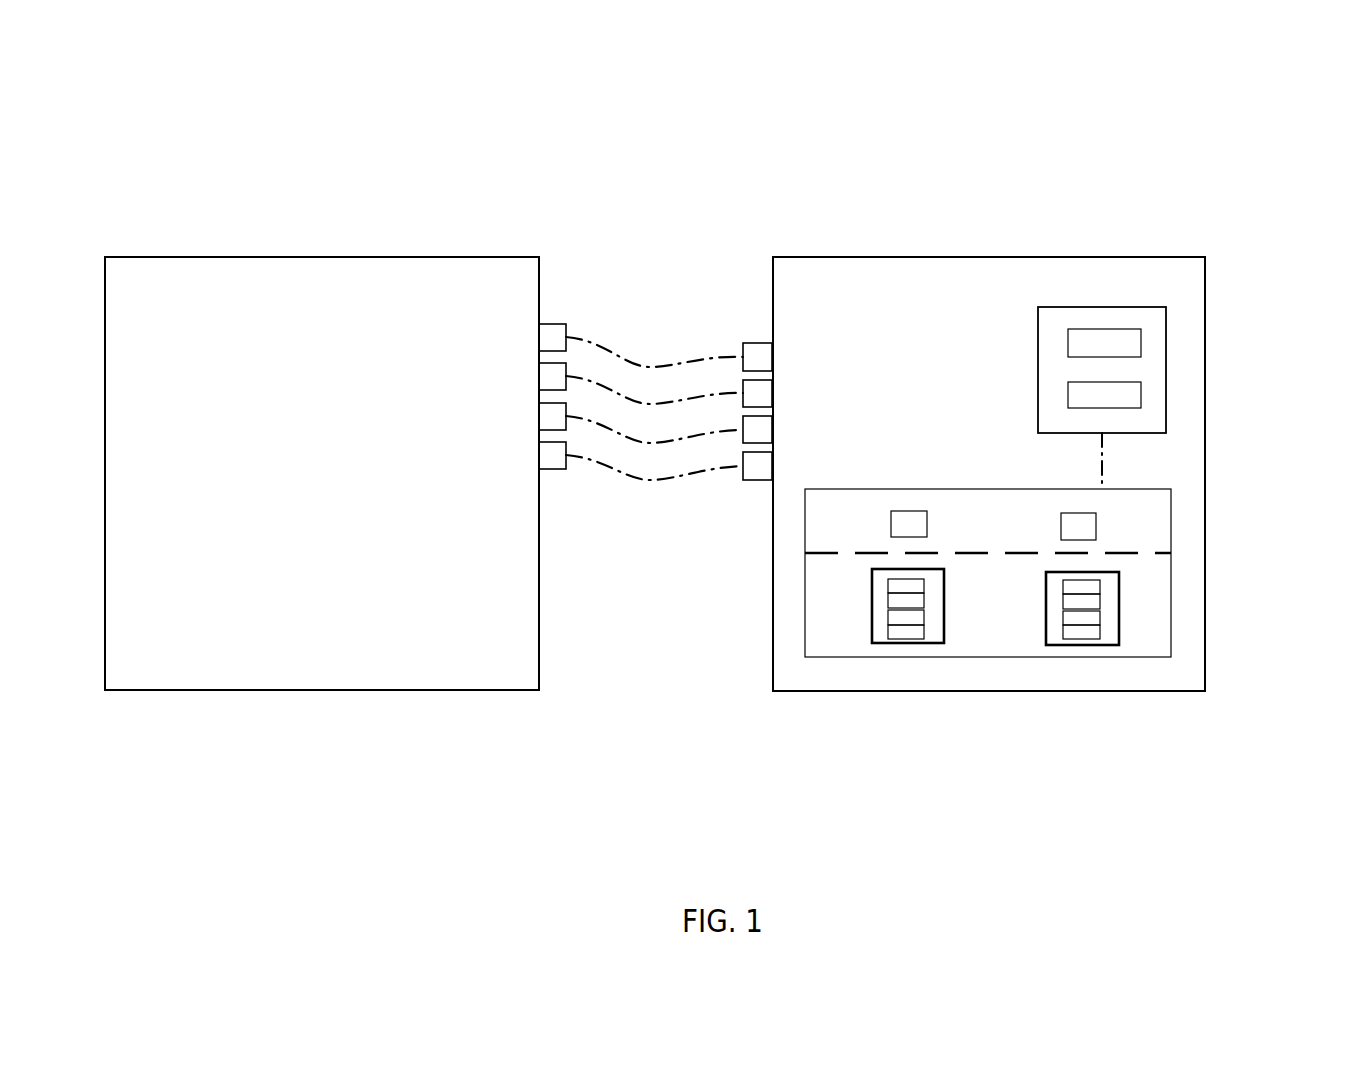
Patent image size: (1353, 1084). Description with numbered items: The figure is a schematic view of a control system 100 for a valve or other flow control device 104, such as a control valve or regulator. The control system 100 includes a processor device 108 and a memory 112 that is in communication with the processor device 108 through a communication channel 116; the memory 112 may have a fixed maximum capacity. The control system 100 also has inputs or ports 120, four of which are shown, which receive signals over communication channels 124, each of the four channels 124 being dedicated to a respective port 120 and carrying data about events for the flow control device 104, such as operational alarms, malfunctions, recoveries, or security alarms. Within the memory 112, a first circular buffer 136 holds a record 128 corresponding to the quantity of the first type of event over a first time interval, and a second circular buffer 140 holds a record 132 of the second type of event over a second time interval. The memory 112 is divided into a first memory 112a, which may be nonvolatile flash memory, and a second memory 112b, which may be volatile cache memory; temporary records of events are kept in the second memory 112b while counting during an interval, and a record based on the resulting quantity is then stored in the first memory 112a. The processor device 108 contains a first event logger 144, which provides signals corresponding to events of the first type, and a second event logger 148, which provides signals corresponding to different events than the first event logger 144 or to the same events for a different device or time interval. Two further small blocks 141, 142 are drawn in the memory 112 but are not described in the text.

The control system 100 is at (1010, 222).
The valve or other flow control device 104 is at (343, 230).
The processor device 108 is at (1102, 307).
The memory 112 is at (988, 657).
The first memory 112a is at (1142, 638).
The second memory 112b is at (1142, 513).
The communication channel 116 is at (1102, 477).
The ports 120 is at (757, 343).
The communication channels 124 is at (667, 363).
The record 128 is at (1100, 593).
The record 132 is at (890, 588).
The first circular buffer 136 is at (1084, 645).
The second circular buffer 140 is at (918, 644).
The second buffer 141 is at (1095, 525).
The first buffer 142 is at (890, 528).
The first event logger 144 is at (1141, 343).
The second event logger 148 is at (1141, 397).